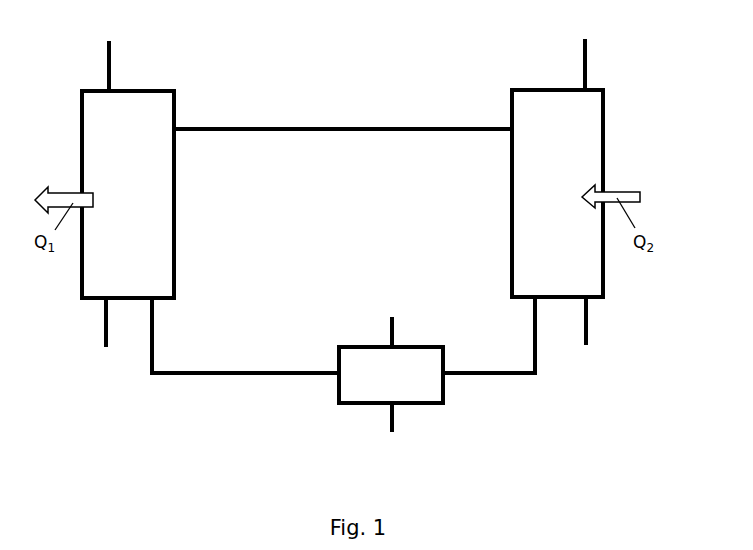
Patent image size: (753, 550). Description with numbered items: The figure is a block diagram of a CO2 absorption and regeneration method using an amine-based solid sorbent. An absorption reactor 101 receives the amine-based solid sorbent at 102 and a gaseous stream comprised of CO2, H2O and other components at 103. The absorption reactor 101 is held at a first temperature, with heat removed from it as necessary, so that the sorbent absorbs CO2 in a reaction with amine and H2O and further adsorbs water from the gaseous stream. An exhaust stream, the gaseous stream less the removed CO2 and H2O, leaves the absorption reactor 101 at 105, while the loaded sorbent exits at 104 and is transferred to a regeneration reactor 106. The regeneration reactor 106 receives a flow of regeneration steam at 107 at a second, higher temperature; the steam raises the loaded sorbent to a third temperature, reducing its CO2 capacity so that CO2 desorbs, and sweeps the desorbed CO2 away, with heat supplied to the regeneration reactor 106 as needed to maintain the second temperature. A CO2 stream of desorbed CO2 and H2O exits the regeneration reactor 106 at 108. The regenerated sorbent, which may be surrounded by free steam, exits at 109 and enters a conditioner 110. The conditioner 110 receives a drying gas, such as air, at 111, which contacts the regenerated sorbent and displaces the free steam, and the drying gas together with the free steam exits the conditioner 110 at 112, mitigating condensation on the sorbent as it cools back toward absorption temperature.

The absorption reactor 101 is at (111, 178).
The amine-based solid sorbent inlet 102 is at (148, 348).
The gaseous stream inlet 103 is at (107, 56).
The loaded sorbent outlet 104 is at (248, 127).
The exhaust stream outlet 105 is at (103, 323).
The regeneration reactor 106 is at (537, 178).
The regeneration steam inlet 107 is at (588, 318).
The CO2 stream outlet 108 is at (587, 60).
The regenerated sorbent outlet 109 is at (532, 315).
The conditioner 110 is at (374, 386).
The drying gas inlet 111 is at (393, 417).
The drying gas and free steam outlet 112 is at (388, 332).